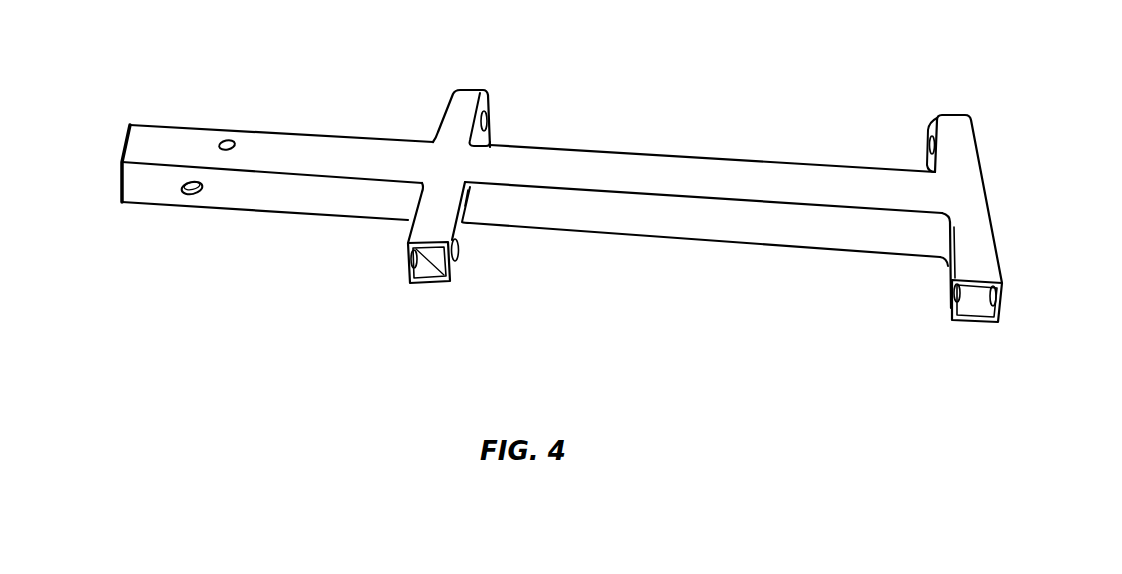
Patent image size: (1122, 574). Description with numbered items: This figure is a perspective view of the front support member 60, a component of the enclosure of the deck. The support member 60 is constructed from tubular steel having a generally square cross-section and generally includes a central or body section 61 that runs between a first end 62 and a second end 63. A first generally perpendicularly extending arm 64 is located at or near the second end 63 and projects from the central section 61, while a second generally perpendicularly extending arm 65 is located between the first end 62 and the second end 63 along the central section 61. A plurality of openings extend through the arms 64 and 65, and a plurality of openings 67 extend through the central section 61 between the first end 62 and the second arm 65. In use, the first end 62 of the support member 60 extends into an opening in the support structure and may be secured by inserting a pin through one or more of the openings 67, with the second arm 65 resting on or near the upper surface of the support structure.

The front support member 60 is at (614, 139).
The central section 61 is at (735, 178).
The first end 62 is at (137, 130).
The second end 63 is at (922, 192).
The first generally perpendicularly extending arm 64 is at (980, 253).
The second generally perpendicularly extending arm 65 is at (455, 92).
The openings 67 is at (225, 139).